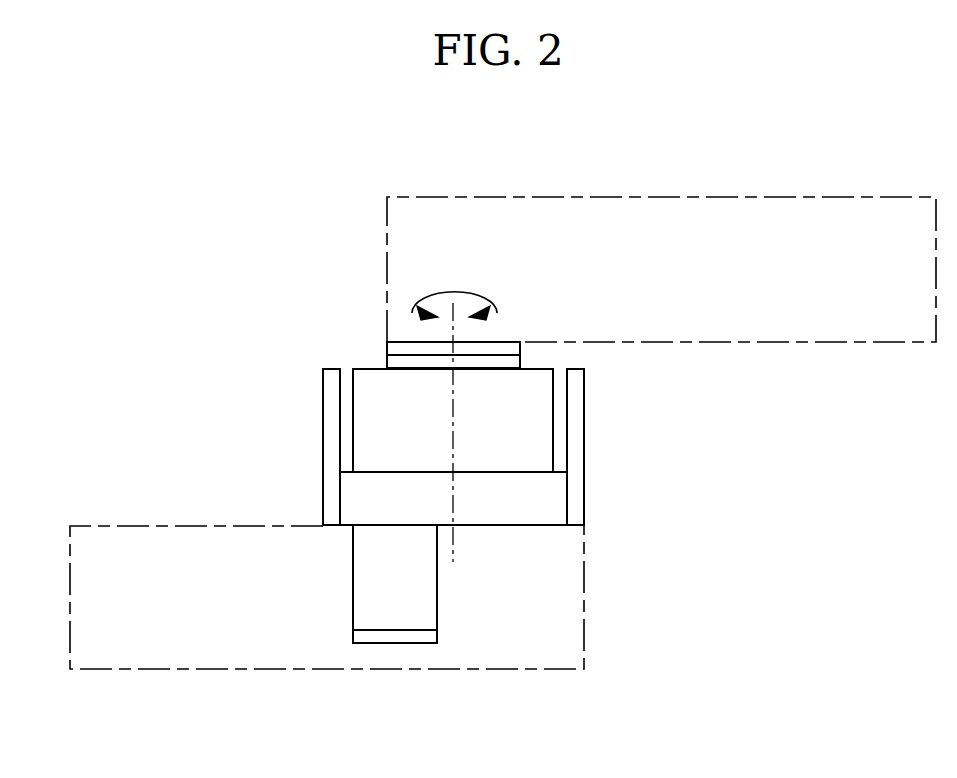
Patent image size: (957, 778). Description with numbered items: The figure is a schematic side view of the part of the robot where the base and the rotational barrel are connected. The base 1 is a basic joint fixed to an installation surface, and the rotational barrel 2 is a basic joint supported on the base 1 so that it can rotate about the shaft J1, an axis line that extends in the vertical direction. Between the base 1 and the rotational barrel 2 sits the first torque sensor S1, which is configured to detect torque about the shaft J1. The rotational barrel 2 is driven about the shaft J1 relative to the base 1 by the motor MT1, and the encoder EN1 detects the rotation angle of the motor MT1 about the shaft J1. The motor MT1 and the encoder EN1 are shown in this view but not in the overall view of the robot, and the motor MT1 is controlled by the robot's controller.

The base 1 is at (178, 526).
The rotational barrel 2 is at (788, 342).
The first torque sensor S1 is at (385, 348).
The shaft J1 is at (454, 286).
The motor MT1 is at (437, 605).
The encoder EN1 is at (397, 643).